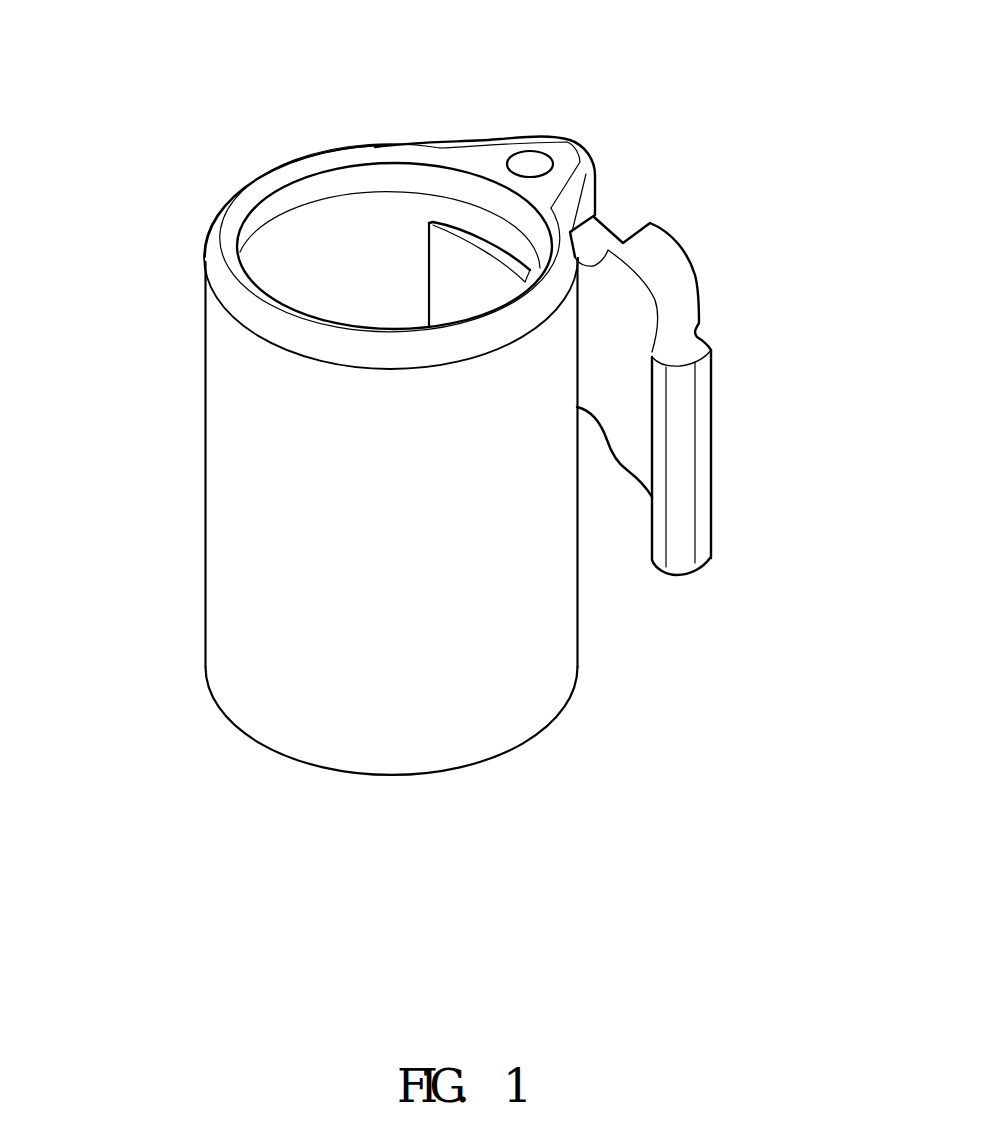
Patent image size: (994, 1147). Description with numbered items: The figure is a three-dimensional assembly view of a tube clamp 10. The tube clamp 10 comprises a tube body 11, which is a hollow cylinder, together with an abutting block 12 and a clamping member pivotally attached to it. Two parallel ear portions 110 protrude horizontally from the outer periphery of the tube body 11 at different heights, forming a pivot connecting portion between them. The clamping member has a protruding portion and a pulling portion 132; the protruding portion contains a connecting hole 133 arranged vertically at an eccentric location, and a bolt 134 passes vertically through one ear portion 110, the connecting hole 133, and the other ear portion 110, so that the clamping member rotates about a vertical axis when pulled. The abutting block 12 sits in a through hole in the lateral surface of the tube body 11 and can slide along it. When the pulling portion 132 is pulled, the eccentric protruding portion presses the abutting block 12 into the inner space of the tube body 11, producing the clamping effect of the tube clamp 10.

The tube clamp 10 is at (474, 396).
The tube body 11 is at (228, 413).
The abutting block 12 is at (453, 263).
The ear portion 110 is at (537, 137).
The bolt 134 is at (525, 160).
The connecting hole 133 is at (665, 287).
The pulling portion 132 is at (682, 427).